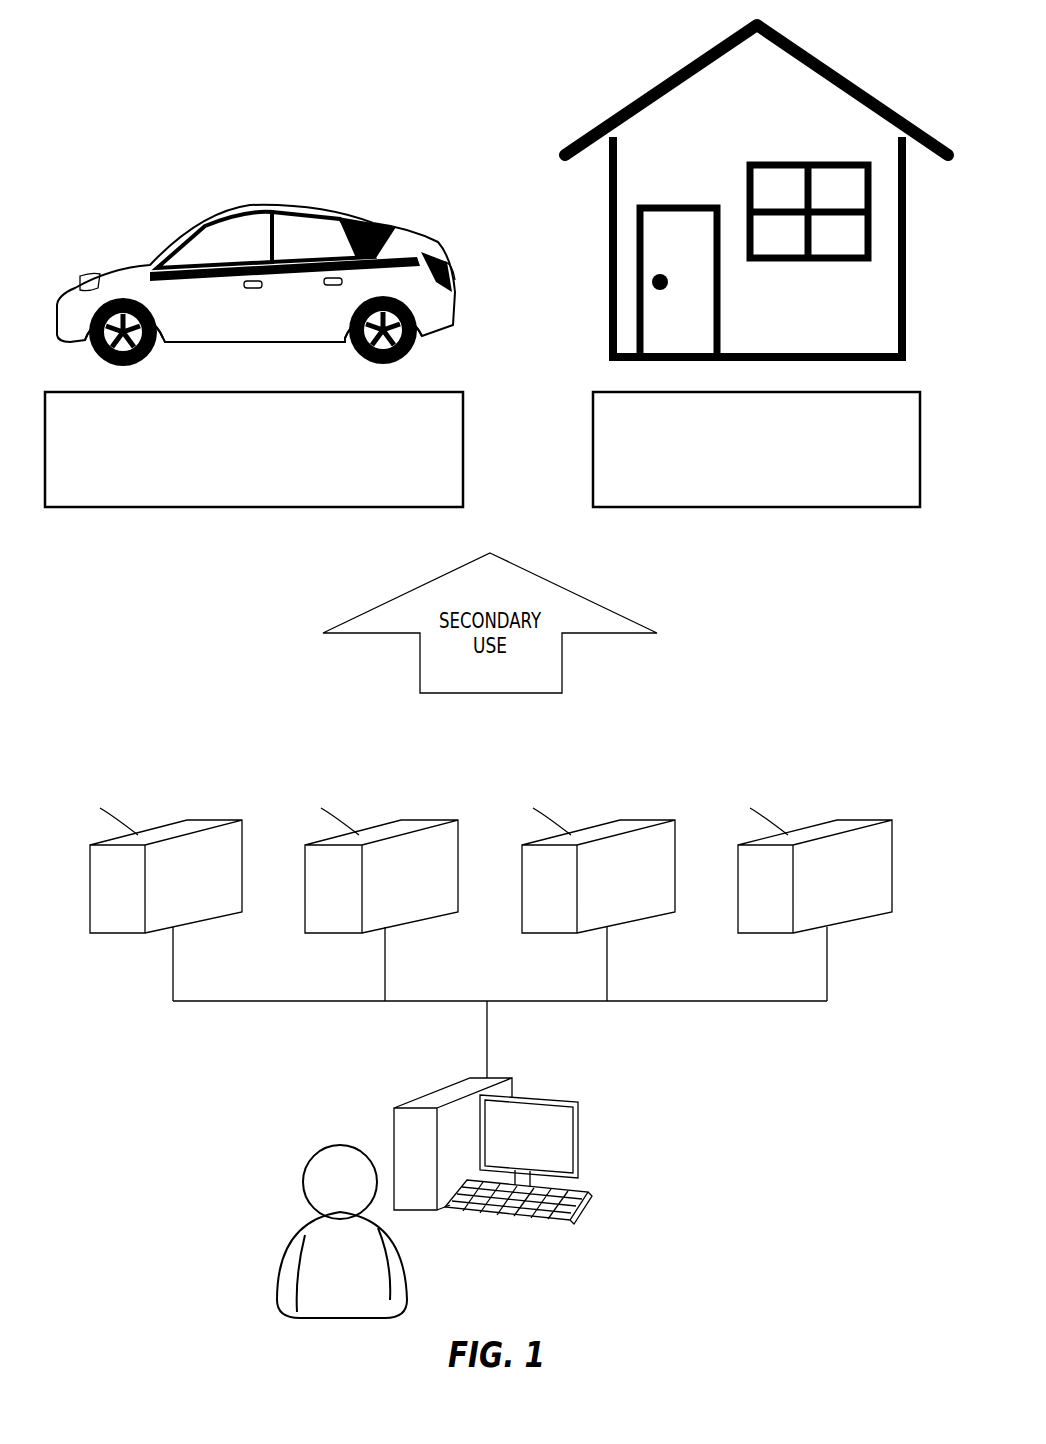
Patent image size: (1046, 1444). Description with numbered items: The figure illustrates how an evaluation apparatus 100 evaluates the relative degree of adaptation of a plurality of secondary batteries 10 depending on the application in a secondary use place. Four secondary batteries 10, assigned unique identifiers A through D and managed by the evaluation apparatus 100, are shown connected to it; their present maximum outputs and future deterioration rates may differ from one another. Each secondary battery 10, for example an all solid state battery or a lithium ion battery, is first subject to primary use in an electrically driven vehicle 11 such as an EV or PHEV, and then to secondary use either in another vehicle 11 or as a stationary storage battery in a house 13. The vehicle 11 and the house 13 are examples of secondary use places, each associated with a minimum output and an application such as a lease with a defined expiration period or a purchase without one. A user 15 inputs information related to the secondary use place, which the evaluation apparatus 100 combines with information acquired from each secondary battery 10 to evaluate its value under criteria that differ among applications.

The electrically driven vehicle 11 is at (208, 222).
The house 13 is at (657, 82).
The secondary battery 10 is at (80, 780).
The evaluation apparatus 100 is at (433, 1090).
The user 15 is at (312, 1153).